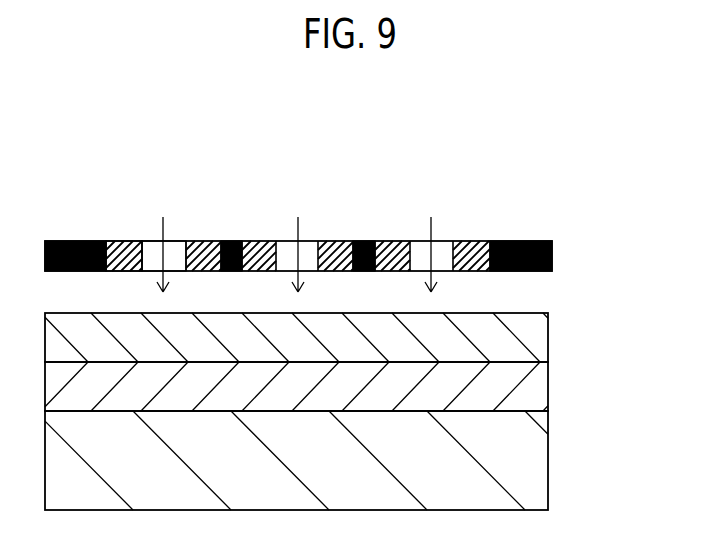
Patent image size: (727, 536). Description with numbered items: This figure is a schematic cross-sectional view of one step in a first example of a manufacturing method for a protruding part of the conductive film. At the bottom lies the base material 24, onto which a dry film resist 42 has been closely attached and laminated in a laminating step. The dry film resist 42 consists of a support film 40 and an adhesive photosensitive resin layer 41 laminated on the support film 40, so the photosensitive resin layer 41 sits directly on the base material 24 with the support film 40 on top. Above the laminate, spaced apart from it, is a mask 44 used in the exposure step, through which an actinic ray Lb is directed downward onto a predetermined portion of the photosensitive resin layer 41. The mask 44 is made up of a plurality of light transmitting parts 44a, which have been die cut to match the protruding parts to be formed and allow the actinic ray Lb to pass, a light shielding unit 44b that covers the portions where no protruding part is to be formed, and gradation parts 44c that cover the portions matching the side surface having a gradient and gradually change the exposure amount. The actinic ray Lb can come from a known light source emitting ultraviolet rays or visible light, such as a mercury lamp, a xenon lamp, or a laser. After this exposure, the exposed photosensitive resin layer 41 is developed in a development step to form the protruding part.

The mask 44 is at (294, 206).
The light transmitting parts 44a is at (147, 240).
The light shielding unit 44b is at (68, 240).
The gradation part 44c is at (198, 240).
The actinic ray Lb is at (296, 235).
The support film 40 is at (542, 335).
The photosensitive resin layer 41 is at (335, 386).
The dry film resist 42 is at (367, 362).
The base material 24 is at (542, 465).